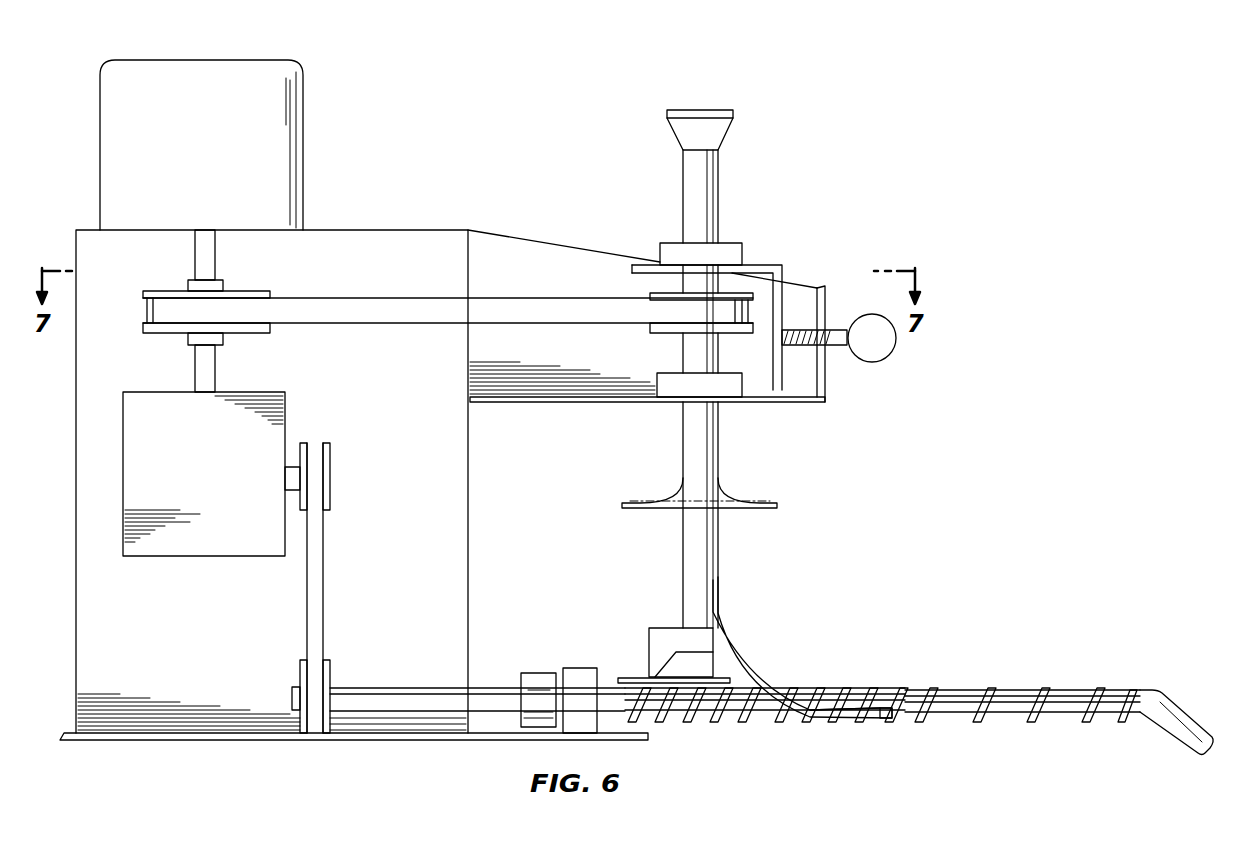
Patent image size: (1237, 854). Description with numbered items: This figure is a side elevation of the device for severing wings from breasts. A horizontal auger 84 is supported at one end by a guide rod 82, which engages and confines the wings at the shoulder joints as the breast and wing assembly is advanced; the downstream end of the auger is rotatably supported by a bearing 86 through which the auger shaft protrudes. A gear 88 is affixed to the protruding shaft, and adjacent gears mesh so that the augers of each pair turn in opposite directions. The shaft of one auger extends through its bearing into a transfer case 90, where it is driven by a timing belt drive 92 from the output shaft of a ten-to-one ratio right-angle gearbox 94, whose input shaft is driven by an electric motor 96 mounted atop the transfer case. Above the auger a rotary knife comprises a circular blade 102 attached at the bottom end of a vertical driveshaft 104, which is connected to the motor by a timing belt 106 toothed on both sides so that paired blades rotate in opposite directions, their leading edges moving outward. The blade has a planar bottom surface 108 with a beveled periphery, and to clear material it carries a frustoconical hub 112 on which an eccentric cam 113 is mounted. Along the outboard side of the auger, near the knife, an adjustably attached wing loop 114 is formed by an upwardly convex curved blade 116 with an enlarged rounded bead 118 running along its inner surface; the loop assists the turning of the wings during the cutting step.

The guide rod 82 is at (1168, 728).
The horizontal auger 84 is at (1012, 688).
The bearing 86 is at (591, 715).
The gear 88 is at (545, 672).
The transfer case 90 is at (403, 543).
The timing belt drive 92 is at (328, 620).
The right-angle gearbox 94 is at (215, 490).
The electric motor 96 is at (215, 168).
The circular blade 102 is at (668, 718).
The vertical driveshaft 104 is at (682, 540).
The timing belt 106 is at (390, 327).
The planar bottom surface 108 is at (636, 690).
The frustoconical hub 112 is at (662, 660).
The eccentric cam 113 is at (660, 628).
The wing loop 114 is at (790, 692).
The curved blade 116 is at (748, 668).
The rounded bead 118 is at (895, 700).